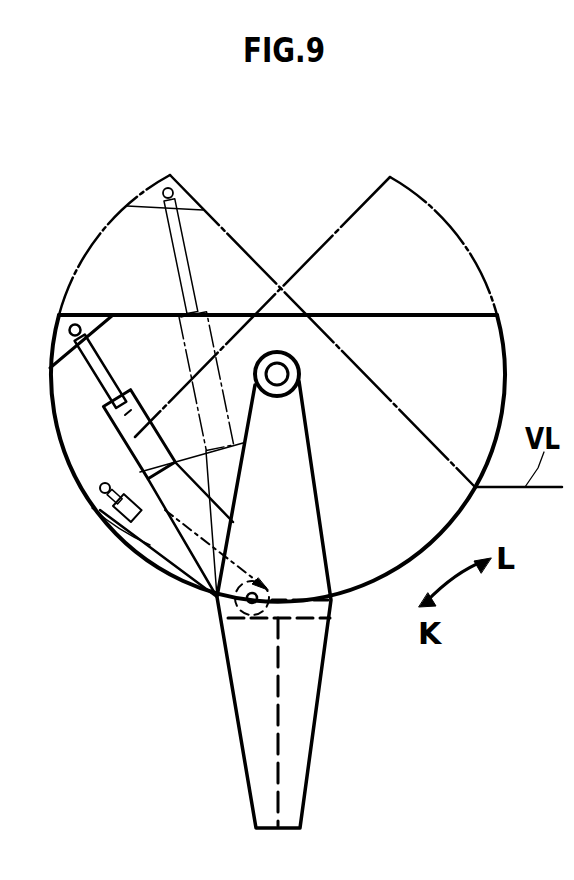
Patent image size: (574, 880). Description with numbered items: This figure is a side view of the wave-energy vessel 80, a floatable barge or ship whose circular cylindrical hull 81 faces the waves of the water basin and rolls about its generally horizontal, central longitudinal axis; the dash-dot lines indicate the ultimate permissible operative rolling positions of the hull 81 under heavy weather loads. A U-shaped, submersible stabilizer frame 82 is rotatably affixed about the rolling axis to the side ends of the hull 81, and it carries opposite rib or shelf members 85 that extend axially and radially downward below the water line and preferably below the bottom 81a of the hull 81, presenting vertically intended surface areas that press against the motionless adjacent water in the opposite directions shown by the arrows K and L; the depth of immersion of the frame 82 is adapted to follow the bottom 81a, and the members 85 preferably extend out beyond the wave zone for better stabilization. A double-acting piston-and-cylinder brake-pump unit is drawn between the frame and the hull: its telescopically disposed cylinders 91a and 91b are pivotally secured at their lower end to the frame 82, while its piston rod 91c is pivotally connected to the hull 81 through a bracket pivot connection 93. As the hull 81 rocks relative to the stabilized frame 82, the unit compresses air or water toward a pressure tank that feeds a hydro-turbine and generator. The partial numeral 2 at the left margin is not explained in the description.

The vessel 80 is at (62, 185).
The circular cylindrical hull 81 is at (473, 360).
The bottom of the hull 81a is at (92, 508).
The stabilizer frame 82 is at (175, 686).
The rib or shelf members 85 is at (300, 666).
The cylinder 91a is at (163, 560).
The cylinder 91b is at (122, 415).
The piston rod 91c is at (98, 376).
The bracket pivot connection 93 is at (69, 328).
The frame 2 is at (7, 607).